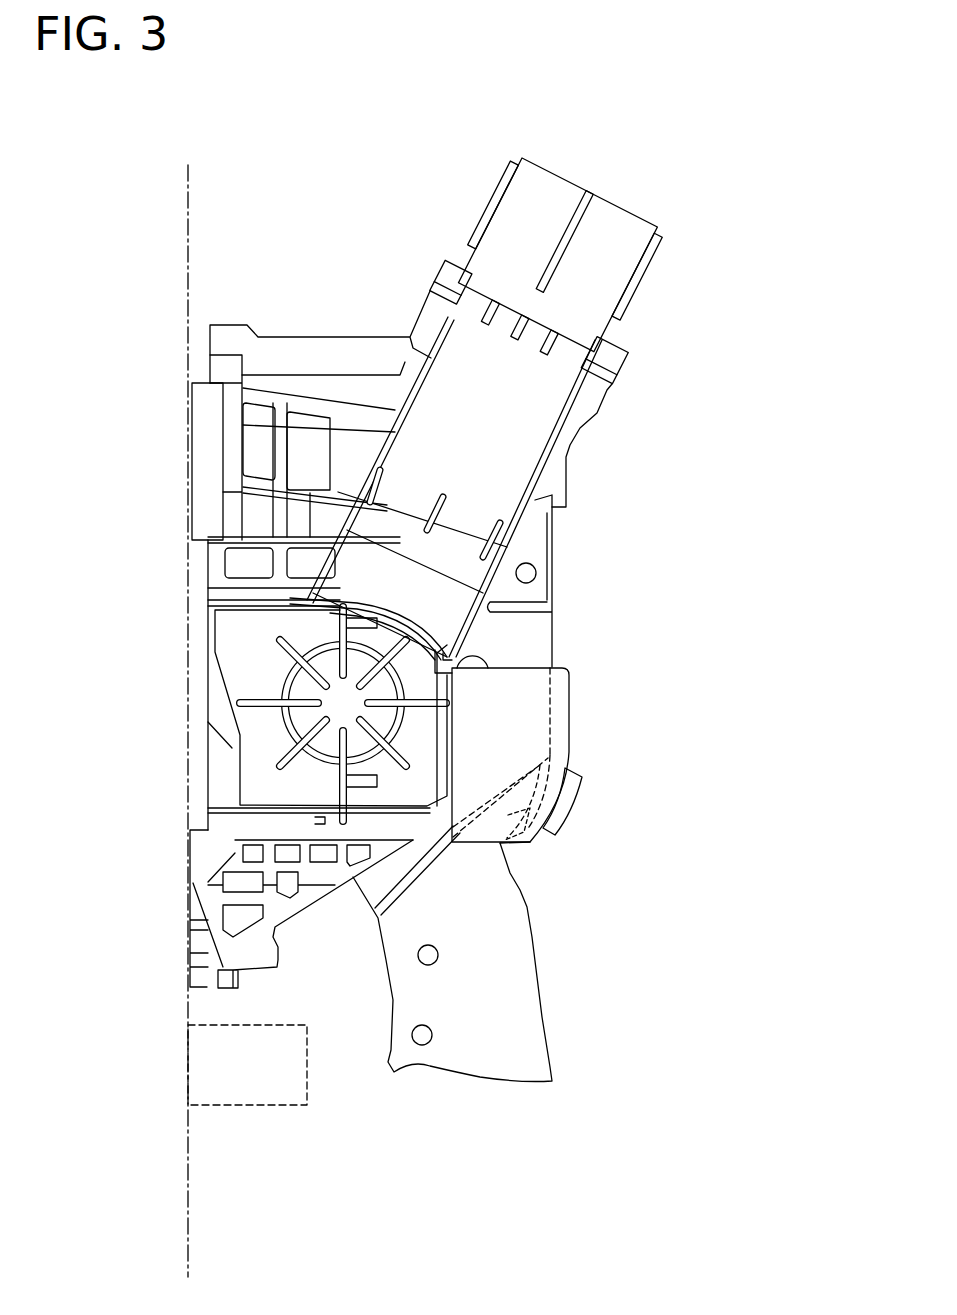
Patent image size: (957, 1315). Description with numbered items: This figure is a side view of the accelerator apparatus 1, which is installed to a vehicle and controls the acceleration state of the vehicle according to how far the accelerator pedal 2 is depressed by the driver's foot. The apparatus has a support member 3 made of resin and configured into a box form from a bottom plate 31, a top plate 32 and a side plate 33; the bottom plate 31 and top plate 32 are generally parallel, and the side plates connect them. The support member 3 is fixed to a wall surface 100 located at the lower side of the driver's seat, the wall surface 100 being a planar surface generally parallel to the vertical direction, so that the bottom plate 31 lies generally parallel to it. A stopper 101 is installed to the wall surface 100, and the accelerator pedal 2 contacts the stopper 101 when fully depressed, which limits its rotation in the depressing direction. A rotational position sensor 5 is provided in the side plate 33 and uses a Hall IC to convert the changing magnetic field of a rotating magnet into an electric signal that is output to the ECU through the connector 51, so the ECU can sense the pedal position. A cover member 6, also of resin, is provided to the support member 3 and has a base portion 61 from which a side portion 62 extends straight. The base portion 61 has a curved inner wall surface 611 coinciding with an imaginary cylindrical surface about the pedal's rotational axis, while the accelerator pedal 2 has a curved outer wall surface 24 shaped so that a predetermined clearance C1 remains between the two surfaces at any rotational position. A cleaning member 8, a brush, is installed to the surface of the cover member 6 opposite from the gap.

The accelerator apparatus 1 is at (706, 378).
The accelerator pedal 2 is at (545, 1000).
The support member 3 is at (343, 335).
The rotational position sensor 5 is at (335, 703).
The cover member 6 is at (569, 694).
The cleaning member 8 is at (582, 795).
The curved outer wall surface 24 is at (530, 815).
The bottom plate 31 is at (210, 640).
The top plate 32 is at (556, 575).
The side plate 33 is at (310, 458).
The connector 51 is at (568, 180).
The base portion 61 is at (571, 767).
The side portion 62 is at (530, 722).
The wall surface 100 is at (188, 1165).
The stopper 101 is at (262, 1106).
The curved inner wall surface 611 is at (523, 842).
The clearance C1 is at (540, 803).